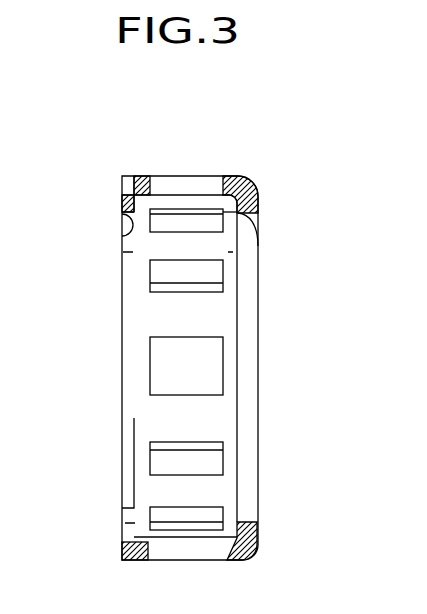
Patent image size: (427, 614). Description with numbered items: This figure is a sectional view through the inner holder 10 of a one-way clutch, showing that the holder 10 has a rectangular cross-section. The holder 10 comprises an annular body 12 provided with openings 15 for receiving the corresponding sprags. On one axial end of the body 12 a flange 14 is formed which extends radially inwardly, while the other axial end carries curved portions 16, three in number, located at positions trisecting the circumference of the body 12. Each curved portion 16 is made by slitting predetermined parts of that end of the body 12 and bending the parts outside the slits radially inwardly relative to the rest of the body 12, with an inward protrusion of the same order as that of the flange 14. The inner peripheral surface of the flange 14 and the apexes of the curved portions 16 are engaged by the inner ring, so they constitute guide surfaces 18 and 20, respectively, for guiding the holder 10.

The inner holder 10 is at (267, 344).
The annular body 12 is at (191, 430).
The flange 14 is at (258, 203).
The opening 15 is at (212, 374).
The curved portion 16 is at (127, 205).
The guide surface 18 is at (258, 241).
The guide surface 20 is at (123, 237).